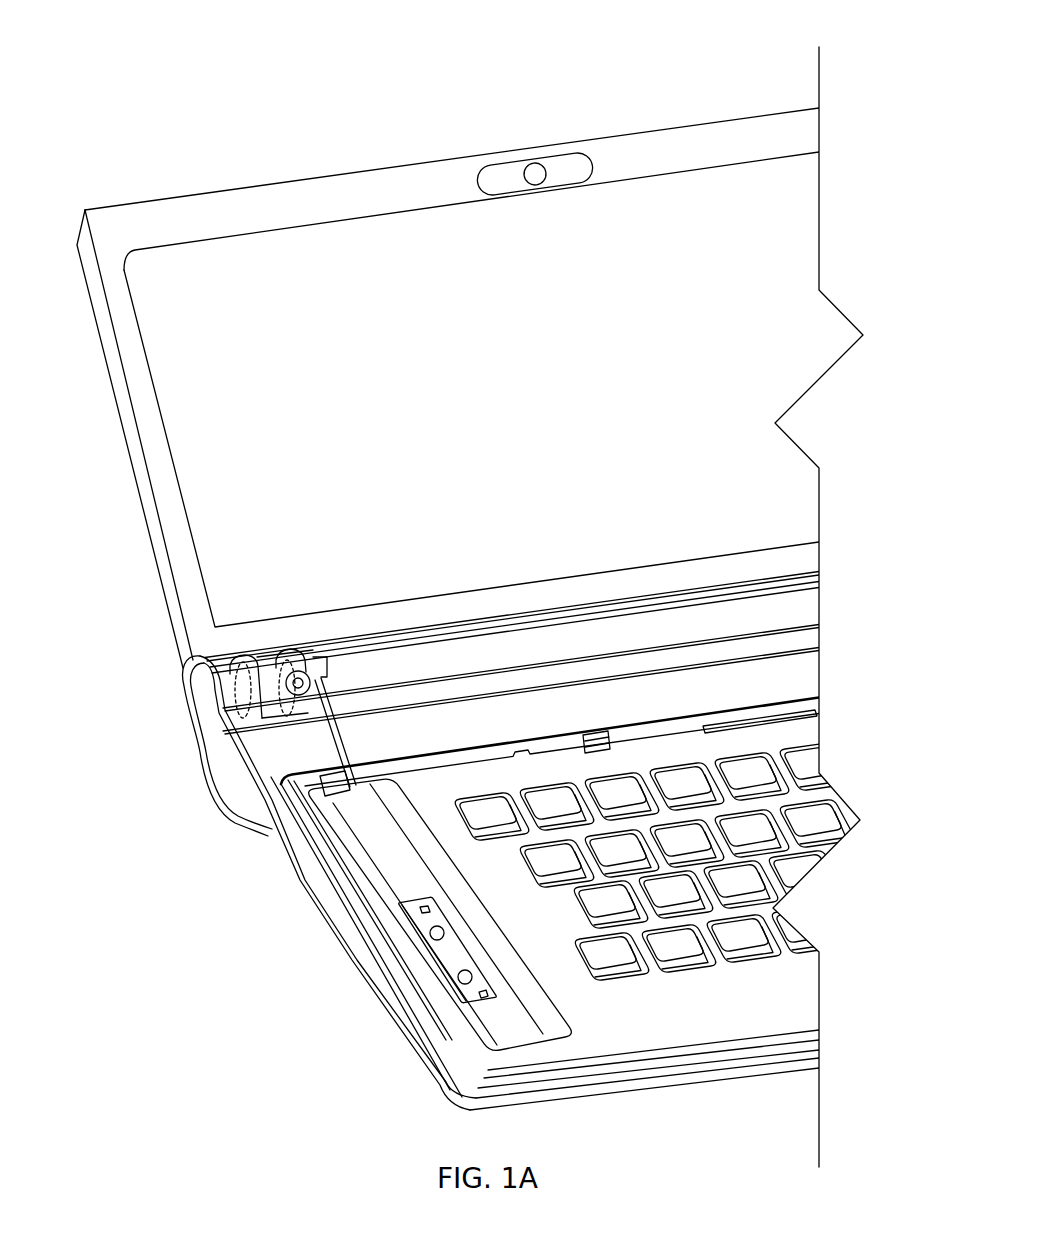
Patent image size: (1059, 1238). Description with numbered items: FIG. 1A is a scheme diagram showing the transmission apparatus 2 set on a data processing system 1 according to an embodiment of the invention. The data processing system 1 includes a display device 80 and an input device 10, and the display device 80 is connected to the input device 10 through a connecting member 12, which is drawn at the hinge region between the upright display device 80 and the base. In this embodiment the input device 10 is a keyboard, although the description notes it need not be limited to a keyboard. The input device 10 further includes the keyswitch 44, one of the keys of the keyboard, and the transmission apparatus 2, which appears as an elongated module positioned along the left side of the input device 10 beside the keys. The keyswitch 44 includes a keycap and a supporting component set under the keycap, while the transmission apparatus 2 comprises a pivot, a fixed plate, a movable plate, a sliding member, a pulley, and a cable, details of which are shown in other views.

The data processing system 1 is at (500, 59).
The display device 80 is at (183, 378).
The connecting member 12 is at (403, 660).
The transmission apparatus 2 is at (392, 848).
The input device 10 is at (703, 993).
The keyswitch 44 is at (617, 957).